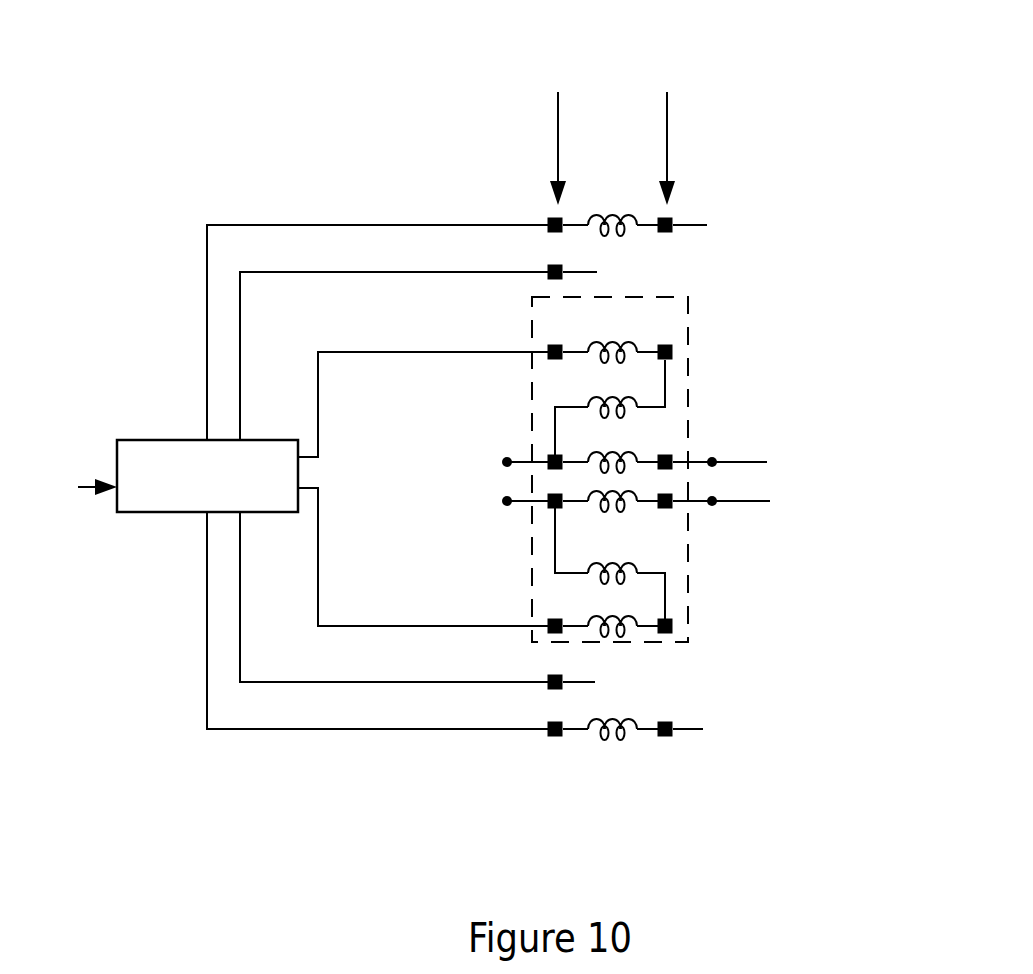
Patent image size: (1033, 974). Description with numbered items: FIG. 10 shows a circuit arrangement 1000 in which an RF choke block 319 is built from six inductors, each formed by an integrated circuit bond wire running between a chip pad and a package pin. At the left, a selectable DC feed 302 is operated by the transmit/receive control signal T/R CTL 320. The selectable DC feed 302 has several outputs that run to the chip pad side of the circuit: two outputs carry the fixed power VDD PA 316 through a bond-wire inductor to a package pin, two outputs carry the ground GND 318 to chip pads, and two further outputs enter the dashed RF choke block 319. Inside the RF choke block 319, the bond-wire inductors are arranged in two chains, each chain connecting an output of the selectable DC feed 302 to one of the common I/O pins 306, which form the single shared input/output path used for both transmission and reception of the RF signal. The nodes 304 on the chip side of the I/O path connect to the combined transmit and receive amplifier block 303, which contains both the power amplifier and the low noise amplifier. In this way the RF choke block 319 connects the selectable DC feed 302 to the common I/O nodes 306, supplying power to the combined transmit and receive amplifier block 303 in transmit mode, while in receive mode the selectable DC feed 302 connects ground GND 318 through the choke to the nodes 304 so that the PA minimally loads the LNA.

The selectable DC feed circuit 1000 is at (105, 32).
The selectable DC feed 302 is at (207, 460).
The combined transmit and receive amplifier block 303 is at (422, 548).
The nodes 304 is at (502, 497).
The input/output (I/O) pins 306 is at (713, 495).
The VDD PA 316 is at (678, 465).
The GND 318 is at (628, 477).
The RF choke block 319 is at (688, 328).
The T/R control signal T/R CTL 320 is at (71, 469).